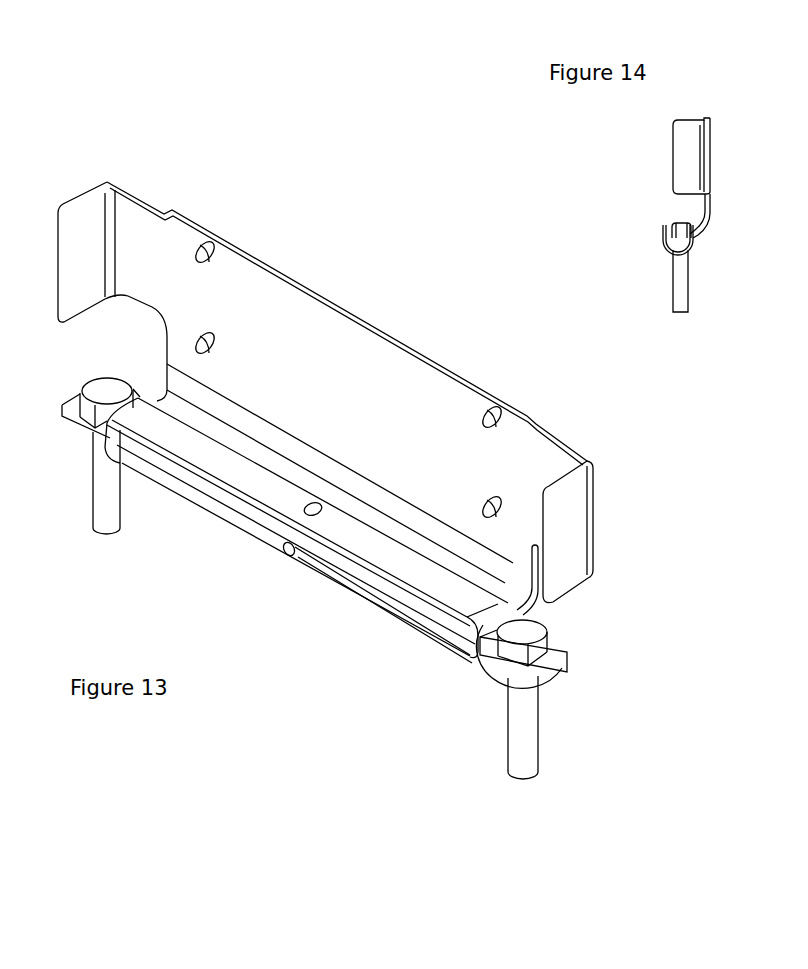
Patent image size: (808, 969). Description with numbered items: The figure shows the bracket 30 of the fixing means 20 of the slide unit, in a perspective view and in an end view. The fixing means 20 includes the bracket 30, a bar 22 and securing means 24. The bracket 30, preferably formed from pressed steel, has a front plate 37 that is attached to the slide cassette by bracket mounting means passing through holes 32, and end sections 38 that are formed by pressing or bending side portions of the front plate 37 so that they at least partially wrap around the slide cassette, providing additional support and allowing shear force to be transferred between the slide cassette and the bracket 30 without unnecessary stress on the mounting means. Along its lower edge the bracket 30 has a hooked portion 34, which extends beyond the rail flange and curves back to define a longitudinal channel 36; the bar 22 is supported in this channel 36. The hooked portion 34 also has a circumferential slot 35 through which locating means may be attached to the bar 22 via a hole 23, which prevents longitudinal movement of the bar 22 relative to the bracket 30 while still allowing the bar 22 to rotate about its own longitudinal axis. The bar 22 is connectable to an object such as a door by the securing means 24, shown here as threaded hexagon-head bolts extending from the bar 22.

In FIG. 13, the fixing means 20 is at (330, 624).
In FIG. 13, the bar 22 is at (452, 598).
In FIG. 14, the bar 22 is at (678, 220).
In FIG. 13, the hole 23 is at (312, 510).
In FIG. 13, the securing means 24 is at (92, 502).
In FIG. 14, the securing means 24 is at (684, 296).
In FIG. 13, the bracket 30 is at (355, 282).
In FIG. 14, the bracket 30 is at (711, 147).
In FIG. 13, the holes 32 is at (491, 417).
In FIG. 13, the hooked portion 34 is at (531, 607).
In FIG. 14, the hooked portion 34 is at (708, 224).
In FIG. 13, the circumferential slot 35 is at (289, 556).
In FIG. 13, the longitudinal channel 36 is at (480, 660).
In FIG. 14, the longitudinal channel 36 is at (665, 247).
In FIG. 13, the front plate 37 is at (260, 298).
In FIG. 13, the end sections 38 is at (82, 235).
In FIG. 14, the end sections 38 is at (688, 135).